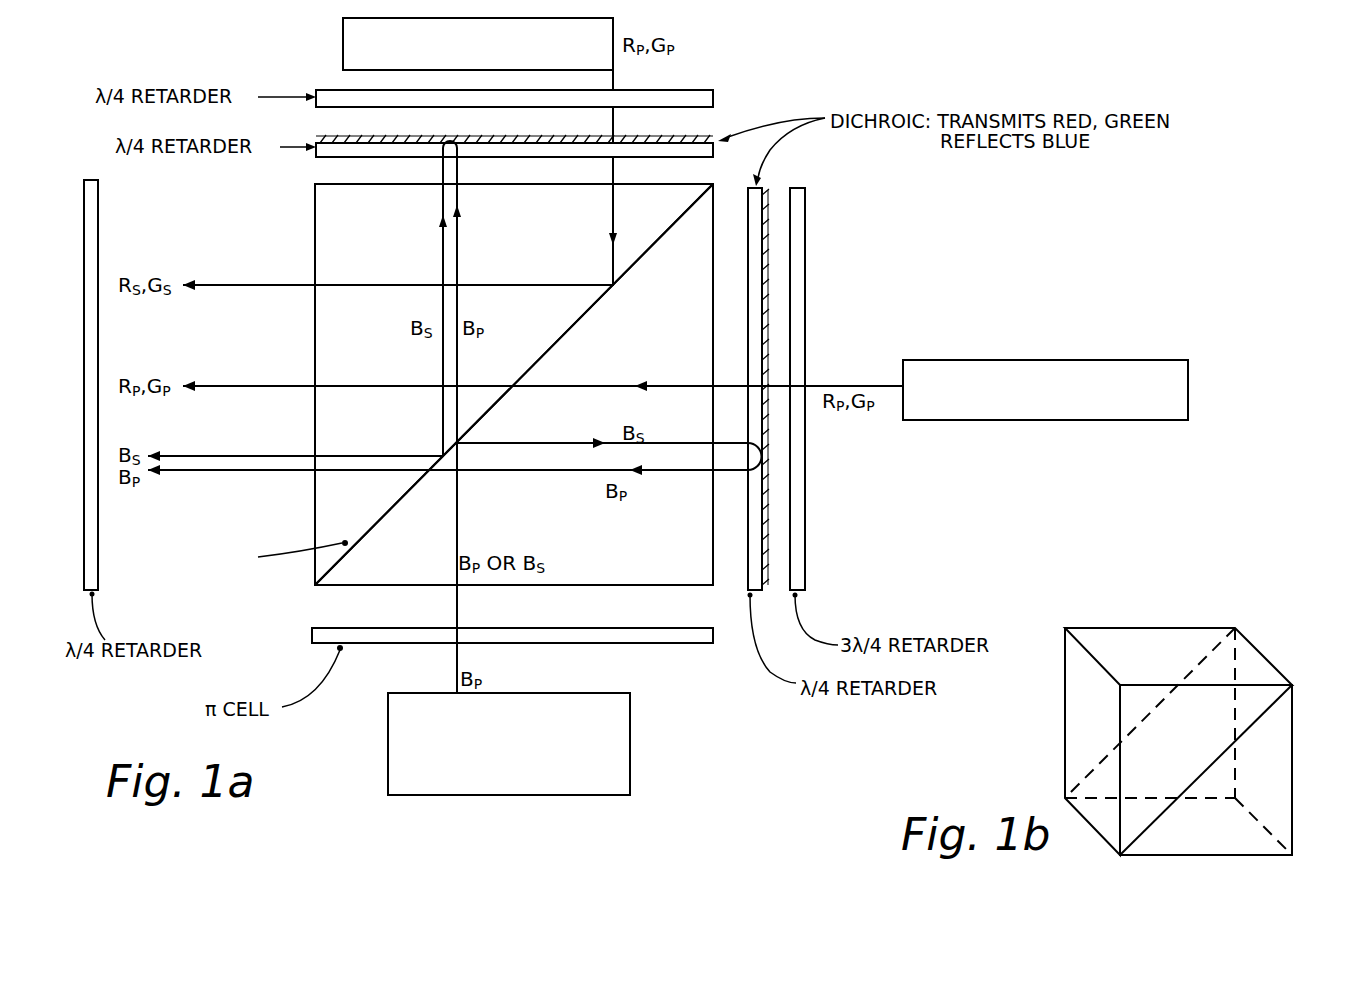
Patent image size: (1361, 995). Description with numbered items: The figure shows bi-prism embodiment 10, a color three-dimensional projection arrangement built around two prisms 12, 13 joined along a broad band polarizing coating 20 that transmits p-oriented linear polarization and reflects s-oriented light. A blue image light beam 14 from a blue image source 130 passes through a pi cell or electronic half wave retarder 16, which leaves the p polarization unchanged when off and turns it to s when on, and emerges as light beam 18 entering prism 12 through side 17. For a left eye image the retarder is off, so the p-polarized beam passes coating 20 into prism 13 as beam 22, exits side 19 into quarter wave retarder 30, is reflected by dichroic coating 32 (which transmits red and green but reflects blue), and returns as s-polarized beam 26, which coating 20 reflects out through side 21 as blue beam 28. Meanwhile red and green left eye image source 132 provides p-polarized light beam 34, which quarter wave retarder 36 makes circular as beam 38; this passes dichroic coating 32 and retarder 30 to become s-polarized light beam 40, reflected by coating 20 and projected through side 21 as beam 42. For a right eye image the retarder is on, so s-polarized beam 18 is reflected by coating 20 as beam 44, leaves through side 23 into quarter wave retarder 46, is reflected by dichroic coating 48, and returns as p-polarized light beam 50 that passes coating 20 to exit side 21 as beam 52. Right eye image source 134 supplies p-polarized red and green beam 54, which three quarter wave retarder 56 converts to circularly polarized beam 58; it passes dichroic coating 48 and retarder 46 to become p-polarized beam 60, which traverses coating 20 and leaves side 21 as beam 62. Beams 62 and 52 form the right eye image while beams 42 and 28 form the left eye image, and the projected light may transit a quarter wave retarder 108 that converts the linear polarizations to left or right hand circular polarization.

In FIG. 1A, the embodiment 10 is at (880, 236).
In FIG. 1A, the prism 12 is at (514, 384).
In FIG. 1B, the prism 12 is at (1296, 858).
In FIG. 1A, the prism 13 is at (514, 384).
In FIG. 1B, the prism 13 is at (1066, 628).
In FIG. 1A, the blue image light beam 14 is at (456, 661).
In FIG. 1A, the pi cell or electronic half wave retarder 16 is at (713, 638).
In FIG. 1A, the side 17 is at (350, 591).
In FIG. 1B, the side 17 is at (1228, 843).
In FIG. 1A, the light beam 18 is at (458, 532).
In FIG. 1A, the side 19 is at (316, 184).
In FIG. 1B, the side 19 is at (1189, 646).
In FIG. 1A, the broad band polarizing coating 20 is at (591, 319).
In FIG. 1B, the broad band polarizing coating 20 is at (1198, 673).
In FIG. 1A, the side 21 is at (314, 345).
In FIG. 1B, the side 21 is at (1078, 722).
In FIG. 1A, the beam 22 is at (458, 248).
In FIG. 1A, the side 23 is at (713, 567).
In FIG. 1B, the side 23 is at (1275, 752).
In FIG. 1A, the beam 26 is at (442, 253).
In FIG. 1A, the blue beam 28 is at (260, 456).
In FIG. 1A, the quarter wave retarder 30 is at (529, 150).
In FIG. 1A, the dichroic coating 32 is at (515, 136).
In FIG. 1A, the light beam 34 is at (614, 78).
In FIG. 1A, the quarter wave retarder 36 is at (713, 98).
In FIG. 1A, the beam 38 is at (614, 122).
In FIG. 1A, the light beam 40 is at (614, 172).
In FIG. 1A, the beam 42 is at (282, 283).
In FIG. 1A, the beam 44 is at (516, 443).
In FIG. 1A, the quarter wave retarder 46 is at (755, 184).
In FIG. 1A, the dichroic coating 48 is at (762, 572).
In FIG. 1A, the light beam 50 is at (580, 472).
In FIG. 1A, the beam 52 is at (260, 472).
In FIG. 1A, the beam 54 is at (876, 386).
In FIG. 1A, the three quarter wave retarder 56 is at (805, 571).
In FIG. 1A, the beam 58 is at (777, 387).
In FIG. 1A, the beam 60 is at (592, 385).
In FIG. 1A, the beam 62 is at (262, 385).
In FIG. 1A, the quarter wave retarder 108 is at (95, 180).
In FIG. 1A, the blue image source 130 is at (388, 757).
In FIG. 1A, the red and green left eye image source 132 is at (343, 43).
In FIG. 1A, the right eye image source 134 is at (1128, 360).